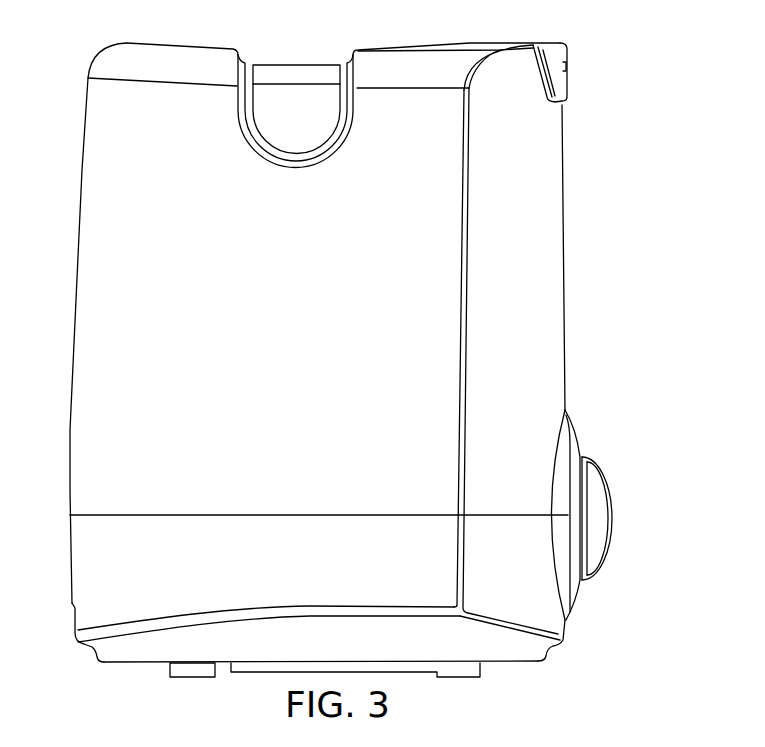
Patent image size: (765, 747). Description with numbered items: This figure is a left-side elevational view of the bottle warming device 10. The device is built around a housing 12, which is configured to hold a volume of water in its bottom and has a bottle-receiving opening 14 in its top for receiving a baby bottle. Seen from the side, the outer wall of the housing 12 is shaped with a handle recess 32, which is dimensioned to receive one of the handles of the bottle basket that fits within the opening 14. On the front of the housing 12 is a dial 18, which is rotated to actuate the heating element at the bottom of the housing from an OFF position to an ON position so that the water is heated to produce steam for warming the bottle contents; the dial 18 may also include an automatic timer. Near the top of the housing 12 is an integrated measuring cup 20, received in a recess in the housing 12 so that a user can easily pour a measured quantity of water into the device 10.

The bottle warming device 10 is at (636, 70).
The housing 12 is at (93, 305).
The bottle-receiving opening 14 is at (318, 38).
The dial 18 is at (597, 515).
The measuring cup 20 is at (559, 48).
The handle recess 32 is at (283, 121).